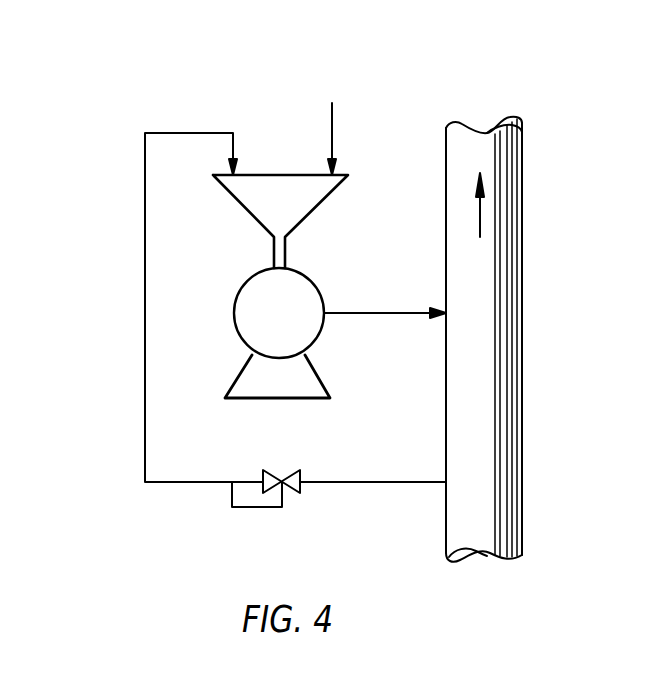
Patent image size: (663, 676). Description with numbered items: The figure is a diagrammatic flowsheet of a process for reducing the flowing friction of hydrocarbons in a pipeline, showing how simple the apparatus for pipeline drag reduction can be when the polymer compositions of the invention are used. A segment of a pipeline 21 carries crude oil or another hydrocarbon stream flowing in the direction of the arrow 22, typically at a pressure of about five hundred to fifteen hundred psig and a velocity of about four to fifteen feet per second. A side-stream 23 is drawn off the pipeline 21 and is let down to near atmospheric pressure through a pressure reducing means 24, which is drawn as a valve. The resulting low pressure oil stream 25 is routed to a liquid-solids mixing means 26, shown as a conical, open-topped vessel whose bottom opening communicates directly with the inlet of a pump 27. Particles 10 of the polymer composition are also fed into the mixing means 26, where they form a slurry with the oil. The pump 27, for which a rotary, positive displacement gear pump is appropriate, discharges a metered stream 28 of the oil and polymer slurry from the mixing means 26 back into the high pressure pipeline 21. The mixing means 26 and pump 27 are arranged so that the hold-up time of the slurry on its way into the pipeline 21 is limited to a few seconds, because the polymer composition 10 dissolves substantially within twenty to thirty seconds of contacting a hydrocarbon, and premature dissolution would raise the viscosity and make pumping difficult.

The particles of the polymer composition 10 is at (332, 103).
The pipeline 21 is at (523, 453).
The arrow 22 is at (480, 203).
The side-stream 23 is at (368, 484).
The pressure reducing means 24 is at (287, 478).
The low pressure oil stream 25 is at (143, 365).
The liquid-solids mixing means 26 is at (262, 207).
The pump 27 is at (243, 310).
The metered stream 28 is at (387, 310).